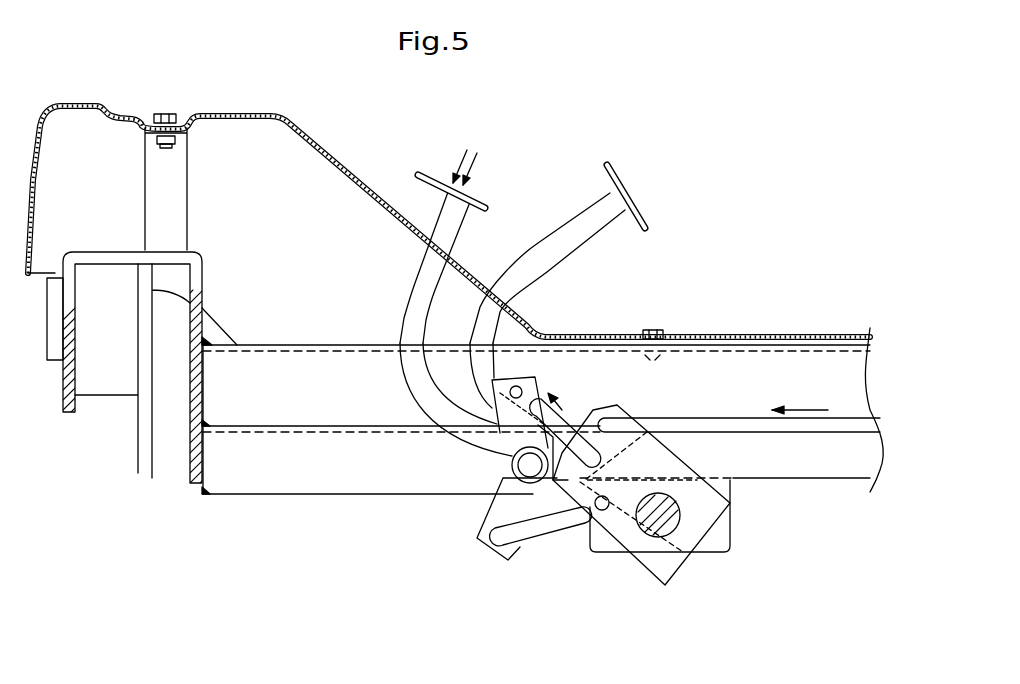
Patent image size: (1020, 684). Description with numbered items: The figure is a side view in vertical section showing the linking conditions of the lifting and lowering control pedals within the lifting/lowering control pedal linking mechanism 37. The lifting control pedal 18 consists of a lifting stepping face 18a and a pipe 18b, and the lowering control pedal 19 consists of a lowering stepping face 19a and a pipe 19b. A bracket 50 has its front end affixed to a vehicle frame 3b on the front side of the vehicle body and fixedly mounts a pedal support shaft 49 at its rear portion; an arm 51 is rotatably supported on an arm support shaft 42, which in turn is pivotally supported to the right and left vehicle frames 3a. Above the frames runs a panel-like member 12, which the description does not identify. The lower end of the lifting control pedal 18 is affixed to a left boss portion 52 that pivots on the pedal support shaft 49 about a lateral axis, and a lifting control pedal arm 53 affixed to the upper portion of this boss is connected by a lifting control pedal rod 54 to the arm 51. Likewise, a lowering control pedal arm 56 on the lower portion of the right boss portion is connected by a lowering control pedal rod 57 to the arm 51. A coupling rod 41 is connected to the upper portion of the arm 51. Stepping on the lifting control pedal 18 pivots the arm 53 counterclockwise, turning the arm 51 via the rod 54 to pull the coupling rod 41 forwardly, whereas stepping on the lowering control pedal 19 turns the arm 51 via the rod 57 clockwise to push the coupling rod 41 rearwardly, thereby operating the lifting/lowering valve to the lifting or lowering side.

The floor panel 12 is at (753, 333).
The vehicle frame 3a is at (813, 480).
The vehicle frame 3b is at (190, 458).
The bracket 50 is at (343, 494).
The lifting control pedal 18 is at (451, 286).
The lifting stepping face 18a is at (430, 177).
The pipe 18b is at (412, 303).
The lowering control pedal 19 is at (609, 263).
The lowering stepping face 19a is at (649, 203).
The pipe 19b is at (573, 253).
The coupling rod 41 is at (700, 418).
The lifting/lowering control pedal linking mechanism 37 is at (565, 513).
The lifting control pedal arm 53 is at (497, 420).
The pedal support shaft 49 is at (528, 465).
The lifting control pedal rod 54 is at (572, 428).
The arm 51 is at (683, 468).
The arm support shaft 42 is at (666, 530).
The lowering control pedal rod 57 is at (550, 530).
The left boss portion 52 is at (502, 478).
The lowering control pedal arm 56 is at (503, 556).